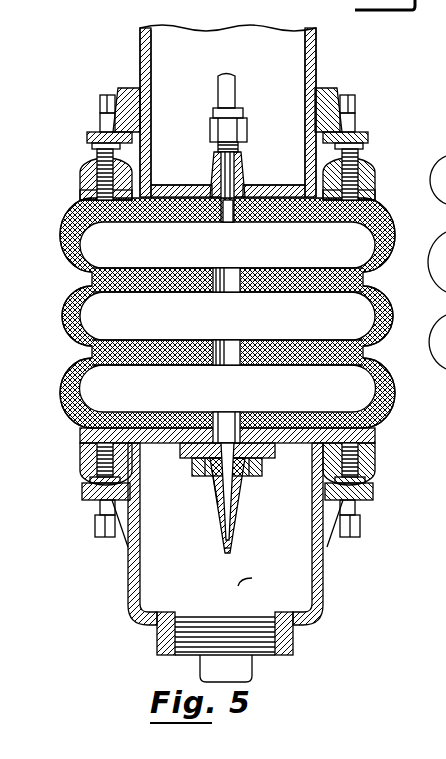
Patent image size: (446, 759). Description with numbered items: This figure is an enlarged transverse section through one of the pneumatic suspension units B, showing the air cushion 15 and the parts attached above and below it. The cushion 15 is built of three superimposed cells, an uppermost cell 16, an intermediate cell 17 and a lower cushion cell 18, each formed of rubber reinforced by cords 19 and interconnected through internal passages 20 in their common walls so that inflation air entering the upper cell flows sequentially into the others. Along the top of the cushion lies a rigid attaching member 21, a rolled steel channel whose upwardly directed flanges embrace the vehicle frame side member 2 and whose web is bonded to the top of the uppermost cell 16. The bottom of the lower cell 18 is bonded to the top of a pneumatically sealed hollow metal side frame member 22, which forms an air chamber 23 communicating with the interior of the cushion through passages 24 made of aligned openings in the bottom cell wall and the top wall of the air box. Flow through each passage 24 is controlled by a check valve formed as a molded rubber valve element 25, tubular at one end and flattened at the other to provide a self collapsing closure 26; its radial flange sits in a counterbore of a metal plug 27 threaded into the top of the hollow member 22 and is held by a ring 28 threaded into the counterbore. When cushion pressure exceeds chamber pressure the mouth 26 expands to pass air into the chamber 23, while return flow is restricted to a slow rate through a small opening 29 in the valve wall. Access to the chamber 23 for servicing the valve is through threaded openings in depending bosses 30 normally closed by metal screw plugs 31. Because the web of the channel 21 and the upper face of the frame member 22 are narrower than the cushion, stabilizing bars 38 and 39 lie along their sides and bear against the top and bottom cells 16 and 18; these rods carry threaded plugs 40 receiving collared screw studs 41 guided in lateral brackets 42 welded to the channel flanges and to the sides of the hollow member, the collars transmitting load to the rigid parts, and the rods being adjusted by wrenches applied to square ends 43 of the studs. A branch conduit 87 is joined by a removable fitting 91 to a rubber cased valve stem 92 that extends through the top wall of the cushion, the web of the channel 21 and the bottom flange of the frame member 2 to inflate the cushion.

The vehicle frame side member 2 is at (140, 48).
The air cushion 15 is at (62, 315).
The uppermost cell 16 is at (62, 240).
The intermediate cell 17 is at (72, 338).
The lower cushion cell 18 is at (62, 392).
The cords 19 is at (378, 252).
The internal passages 20 is at (230, 268).
The rigid attaching member 21 is at (135, 88).
The hollow metal side frame member 22 is at (323, 565).
The air chamber 23 is at (260, 575).
The passages 24 is at (228, 412).
The molded rubber valve element 25 is at (215, 505).
The self collapsing closure 26 is at (222, 557).
The metal plug 27 is at (258, 452).
The ring 28 is at (247, 476).
The small opening 29 is at (205, 484).
The depending bosses 30 is at (292, 630).
The metal screw plugs 31 is at (258, 663).
The stabilizing bar 38 is at (80, 178).
The stabilizing bar 39 is at (80, 447).
The threaded plugs 40 is at (83, 183).
The collared screw studs 41 is at (357, 150).
The lateral brackets 42 is at (87, 137).
The square ends 43 is at (352, 95).
The branch conduit 87 is at (218, 90).
The removable fitting 91 is at (247, 128).
The valve stem 92 is at (240, 165).
The pneumatic suspension unit B is at (96, 594).